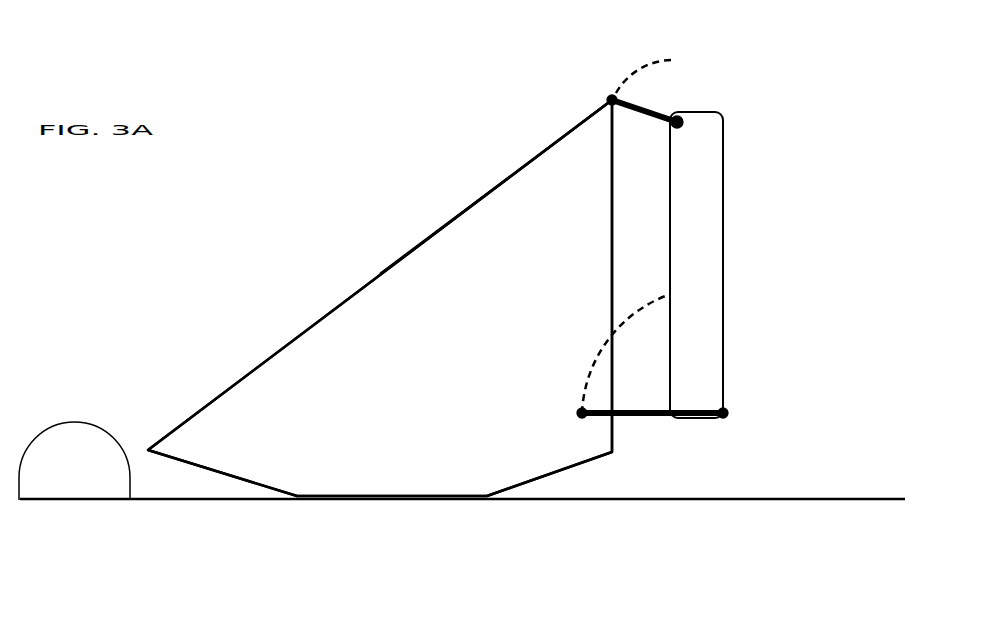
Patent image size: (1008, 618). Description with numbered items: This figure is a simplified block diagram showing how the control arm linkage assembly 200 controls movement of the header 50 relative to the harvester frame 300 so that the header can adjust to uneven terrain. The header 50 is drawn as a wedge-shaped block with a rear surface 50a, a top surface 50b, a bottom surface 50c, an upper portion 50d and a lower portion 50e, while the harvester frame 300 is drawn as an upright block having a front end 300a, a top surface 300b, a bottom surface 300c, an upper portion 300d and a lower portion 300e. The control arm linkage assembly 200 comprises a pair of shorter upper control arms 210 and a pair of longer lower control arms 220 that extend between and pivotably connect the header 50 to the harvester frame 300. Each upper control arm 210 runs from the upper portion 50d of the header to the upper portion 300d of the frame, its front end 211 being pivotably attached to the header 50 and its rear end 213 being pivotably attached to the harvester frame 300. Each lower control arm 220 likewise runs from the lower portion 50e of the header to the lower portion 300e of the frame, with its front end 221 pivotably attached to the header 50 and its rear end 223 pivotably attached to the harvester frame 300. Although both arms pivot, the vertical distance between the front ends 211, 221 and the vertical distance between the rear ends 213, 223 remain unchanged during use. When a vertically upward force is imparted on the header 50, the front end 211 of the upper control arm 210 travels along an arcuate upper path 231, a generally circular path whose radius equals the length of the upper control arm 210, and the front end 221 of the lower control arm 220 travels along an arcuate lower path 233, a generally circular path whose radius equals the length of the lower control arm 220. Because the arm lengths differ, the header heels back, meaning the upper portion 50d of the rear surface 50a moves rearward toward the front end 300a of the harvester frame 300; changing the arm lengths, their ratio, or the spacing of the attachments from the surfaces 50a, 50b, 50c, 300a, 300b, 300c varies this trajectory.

The header 50 is at (412, 374).
The rear surface of the header 50a is at (615, 278).
The top surface of the header 50b is at (357, 277).
The bottom surface of the header 50c is at (222, 478).
The upper portion of the header 50d is at (548, 127).
The lower portion of the header 50e is at (592, 468).
The control arm linkage assembly 200 is at (611, 244).
The upper control arm 210 is at (653, 110).
The front end of the upper control arm 211 is at (593, 93).
The rear end of the upper control arm 213 is at (690, 130).
The lower control arm 220 is at (647, 420).
The front end of the lower control arm 221 is at (566, 415).
The rear end of the lower control arm 223 is at (740, 414).
The arcuate upper path 231 is at (623, 68).
The arcuate lower path 233 is at (592, 350).
The harvester frame 300 is at (682, 249).
The front end of the harvester frame 300a is at (665, 160).
The top surface of the harvester frame 300b is at (717, 111).
The bottom surface of the harvester frame 300c is at (695, 422).
The upper portion of the harvester frame 300d is at (736, 147).
The lower portion of the harvester frame 300e is at (740, 398).